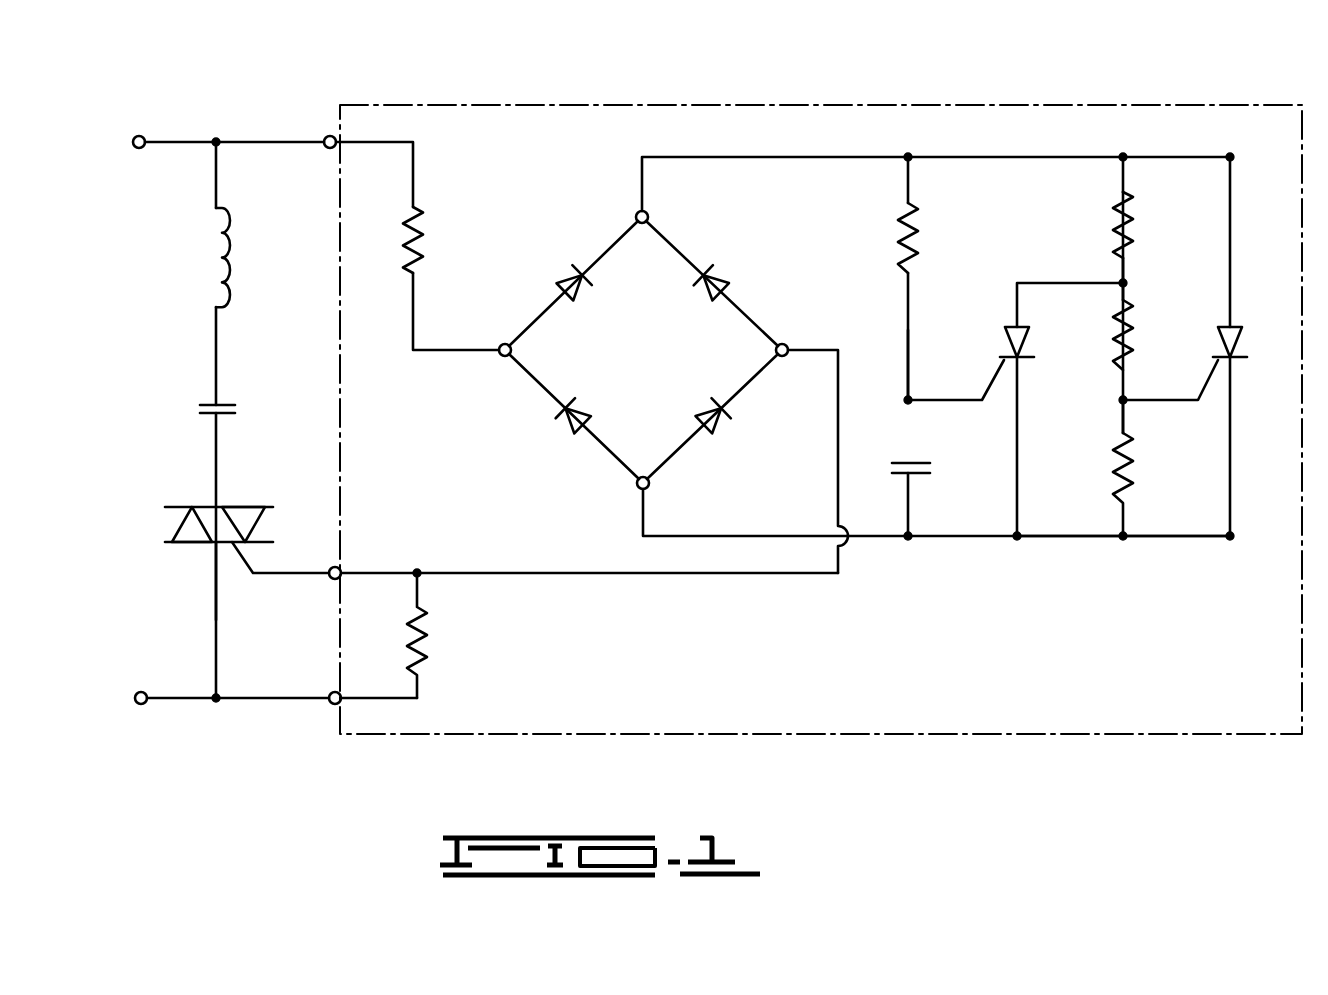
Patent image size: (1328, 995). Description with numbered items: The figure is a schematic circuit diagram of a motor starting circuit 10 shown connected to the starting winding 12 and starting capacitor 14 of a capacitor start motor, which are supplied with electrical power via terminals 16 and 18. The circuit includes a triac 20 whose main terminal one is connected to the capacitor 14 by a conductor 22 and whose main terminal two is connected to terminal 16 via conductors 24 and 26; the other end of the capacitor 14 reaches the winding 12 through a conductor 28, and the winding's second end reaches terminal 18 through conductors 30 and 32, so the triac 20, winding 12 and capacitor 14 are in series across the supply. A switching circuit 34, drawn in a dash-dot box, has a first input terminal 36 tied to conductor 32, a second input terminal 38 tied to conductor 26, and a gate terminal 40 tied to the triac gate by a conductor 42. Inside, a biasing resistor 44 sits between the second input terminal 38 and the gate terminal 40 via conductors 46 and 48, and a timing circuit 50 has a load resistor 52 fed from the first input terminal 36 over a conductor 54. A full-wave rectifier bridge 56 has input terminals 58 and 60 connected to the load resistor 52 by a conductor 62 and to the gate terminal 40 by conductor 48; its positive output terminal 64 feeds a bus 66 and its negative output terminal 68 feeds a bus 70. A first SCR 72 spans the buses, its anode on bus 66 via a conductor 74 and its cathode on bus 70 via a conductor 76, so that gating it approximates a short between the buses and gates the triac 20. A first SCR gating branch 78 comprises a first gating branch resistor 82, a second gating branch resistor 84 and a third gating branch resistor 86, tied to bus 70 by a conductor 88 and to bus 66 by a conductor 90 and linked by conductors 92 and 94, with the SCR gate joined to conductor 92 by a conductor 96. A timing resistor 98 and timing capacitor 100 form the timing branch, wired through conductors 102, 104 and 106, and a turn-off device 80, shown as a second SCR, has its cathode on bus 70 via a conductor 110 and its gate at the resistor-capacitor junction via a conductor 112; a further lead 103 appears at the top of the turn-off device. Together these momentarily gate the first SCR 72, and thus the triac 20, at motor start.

The motor starting circuit 10 is at (200, 630).
The starting winding 12 is at (232, 240).
The starting capacitor 14 is at (236, 403).
The terminal 16 is at (141, 705).
The terminal 18 is at (141, 136).
The triac 20 is at (240, 505).
The conductor 22 is at (216, 450).
The conductor 24 is at (216, 607).
The conductor 26 is at (252, 702).
The conductor 28 is at (216, 333).
The conductor 30 is at (216, 182).
The conductor 32 is at (256, 140).
The switching circuit 34 is at (877, 98).
The first input terminal 36 is at (330, 136).
The second input terminal 38 is at (333, 705).
The gate terminal 40 is at (332, 567).
The conductor 42 is at (290, 578).
The biasing resistor 44 is at (432, 648).
The conductor 46 is at (385, 700).
The conductor 48 is at (440, 572).
The timing circuit 50 is at (962, 542).
The load resistor 52 is at (428, 212).
The conductor 54 is at (420, 160).
The full-wave rectifier bridge 56 is at (607, 457).
The input terminal 58 is at (503, 358).
The input terminal 60 is at (786, 343).
The conductor 62 is at (425, 302).
The positive output terminal 64 is at (648, 212).
The bus 66 is at (1027, 157).
The negative output terminal 68 is at (650, 487).
The bus 70 is at (1085, 538).
The first SCR 72 is at (1237, 322).
The conductor 74 is at (1230, 210).
The conductor 76 is at (1236, 448).
The first SCR gating branch 78 is at (1118, 262).
The turn-off device 80 is at (1030, 338).
The first gating branch resistor 82 is at (915, 305).
The second gating branch resistor 84 is at (1135, 322).
The third gating branch resistor 86 is at (1133, 215).
The conductor 88 is at (1135, 520).
The conductor 90 is at (1120, 182).
The conductor 92 is at (1135, 417).
The conductor 94 is at (1135, 275).
The conductor 96 is at (1160, 398).
The timing resistor 98 is at (905, 225).
The timing capacitor 100 is at (932, 456).
The conductor 102 is at (915, 182).
The conductor 103 is at (1050, 282).
The conductor 104 is at (912, 347).
The conductor 106 is at (912, 512).
The conductor 110 is at (1022, 420).
The conductor 112 is at (955, 403).